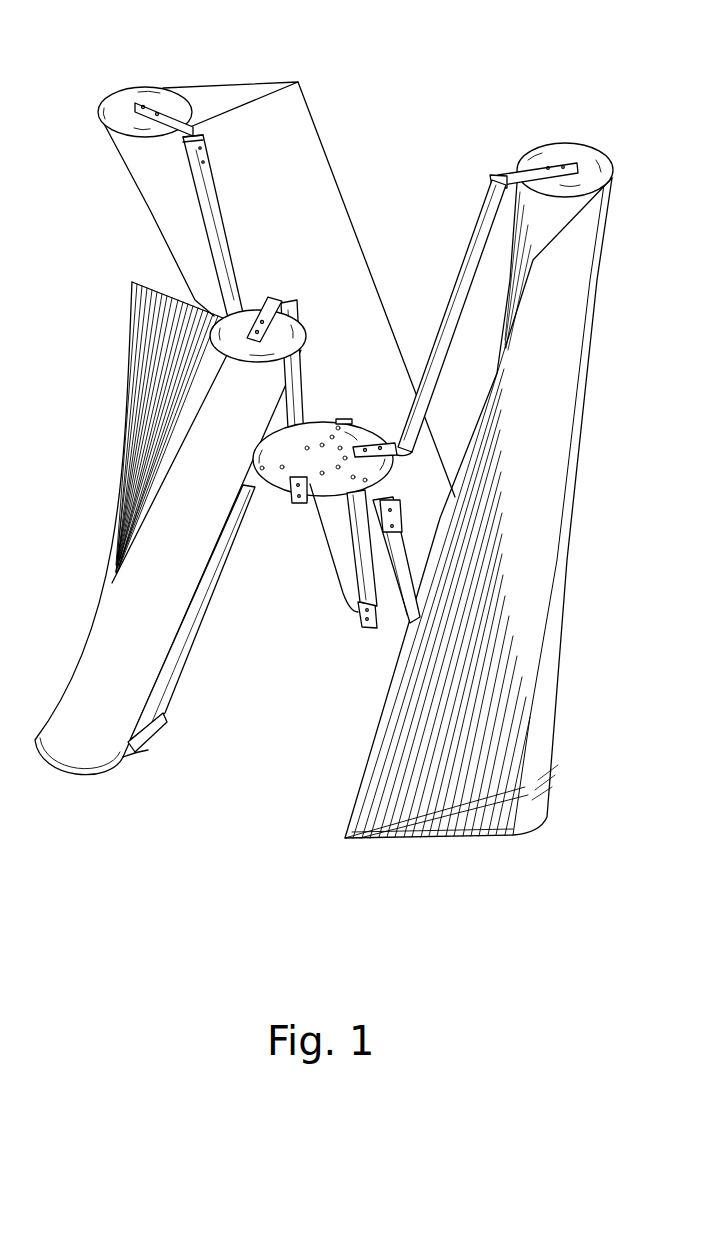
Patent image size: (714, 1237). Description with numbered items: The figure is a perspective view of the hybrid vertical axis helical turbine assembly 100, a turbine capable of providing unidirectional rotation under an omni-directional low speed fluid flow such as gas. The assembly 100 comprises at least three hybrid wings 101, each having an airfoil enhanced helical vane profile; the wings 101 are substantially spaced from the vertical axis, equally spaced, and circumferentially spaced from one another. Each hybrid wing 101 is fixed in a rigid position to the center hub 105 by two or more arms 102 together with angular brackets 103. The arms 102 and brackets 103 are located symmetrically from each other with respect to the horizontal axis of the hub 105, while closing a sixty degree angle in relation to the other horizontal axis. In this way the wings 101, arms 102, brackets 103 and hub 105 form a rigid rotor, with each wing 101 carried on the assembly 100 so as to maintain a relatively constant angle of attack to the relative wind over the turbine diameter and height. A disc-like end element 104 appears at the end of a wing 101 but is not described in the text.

The hybrid vertical axis turbine assembly 100 is at (415, 62).
The hybrid wing 101 is at (280, 76).
The arm 102 is at (467, 233).
The angular bracket 103 is at (493, 173).
The end disk 104 is at (151, 82).
The center hub 105 is at (287, 497).